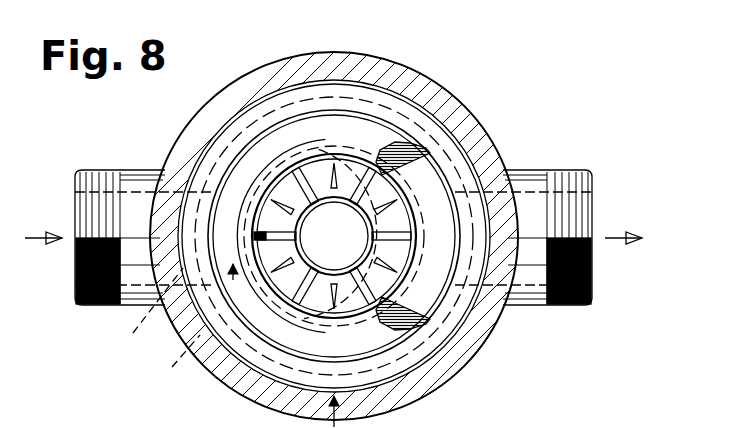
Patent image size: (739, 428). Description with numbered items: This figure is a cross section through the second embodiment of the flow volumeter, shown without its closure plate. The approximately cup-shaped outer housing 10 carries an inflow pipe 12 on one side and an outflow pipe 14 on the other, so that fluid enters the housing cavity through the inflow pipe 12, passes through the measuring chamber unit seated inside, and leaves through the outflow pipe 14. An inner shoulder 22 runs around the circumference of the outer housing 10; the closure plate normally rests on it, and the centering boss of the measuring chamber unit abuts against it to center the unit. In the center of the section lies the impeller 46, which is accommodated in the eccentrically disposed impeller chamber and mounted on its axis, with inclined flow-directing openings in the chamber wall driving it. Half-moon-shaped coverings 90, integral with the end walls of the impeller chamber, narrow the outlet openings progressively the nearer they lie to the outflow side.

The outer housing 10 is at (500, 138).
The inflow pipe 12 is at (124, 170).
The outflow pipe 14 is at (545, 170).
The inner shoulder 22 is at (438, 340).
The impeller 46 is at (356, 178).
The half-moon-shaped covering 90 is at (382, 218).